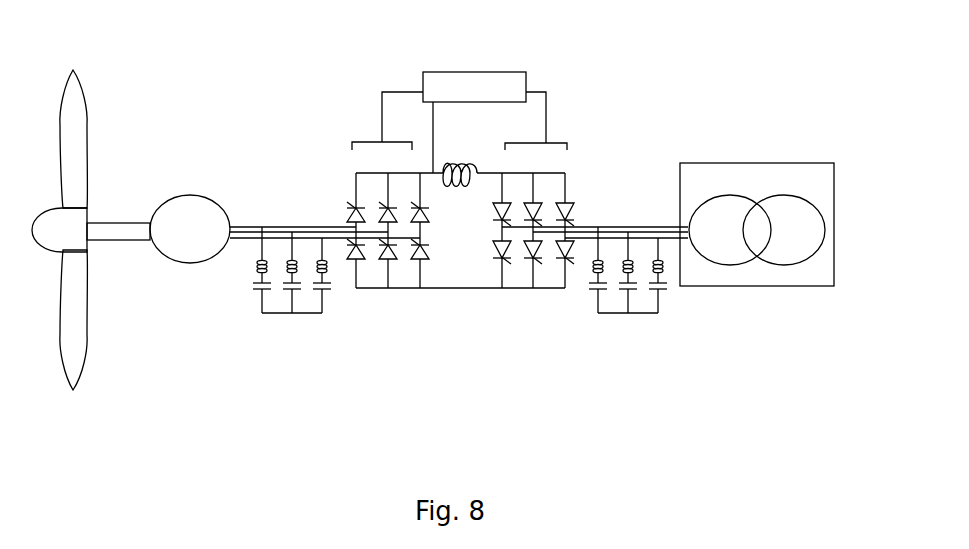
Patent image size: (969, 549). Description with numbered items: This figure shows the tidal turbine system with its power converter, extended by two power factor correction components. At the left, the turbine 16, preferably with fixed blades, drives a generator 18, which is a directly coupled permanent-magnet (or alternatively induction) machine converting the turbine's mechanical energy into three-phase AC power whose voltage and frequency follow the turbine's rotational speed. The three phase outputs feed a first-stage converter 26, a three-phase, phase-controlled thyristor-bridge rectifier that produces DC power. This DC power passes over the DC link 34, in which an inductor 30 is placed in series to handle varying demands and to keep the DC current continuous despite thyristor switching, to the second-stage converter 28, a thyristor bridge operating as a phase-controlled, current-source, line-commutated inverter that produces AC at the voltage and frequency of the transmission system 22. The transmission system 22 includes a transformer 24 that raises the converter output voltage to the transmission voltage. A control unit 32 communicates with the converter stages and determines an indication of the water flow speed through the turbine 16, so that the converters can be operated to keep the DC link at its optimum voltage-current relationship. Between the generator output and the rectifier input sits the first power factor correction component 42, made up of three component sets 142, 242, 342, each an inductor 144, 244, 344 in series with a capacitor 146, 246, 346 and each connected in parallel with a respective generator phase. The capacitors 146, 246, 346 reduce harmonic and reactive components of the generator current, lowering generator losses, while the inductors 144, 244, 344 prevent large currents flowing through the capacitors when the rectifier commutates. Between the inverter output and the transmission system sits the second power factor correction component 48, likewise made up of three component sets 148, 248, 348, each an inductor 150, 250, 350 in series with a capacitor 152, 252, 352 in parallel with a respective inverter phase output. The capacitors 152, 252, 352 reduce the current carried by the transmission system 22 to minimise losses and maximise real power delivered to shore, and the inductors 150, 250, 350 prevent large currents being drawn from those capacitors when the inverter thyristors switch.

The turbine 16 is at (83, 122).
The generator 18 is at (177, 195).
The transmission system 22 is at (793, 163).
The transformer 24 is at (730, 195).
The first-stage converter 26 is at (392, 288).
The second-stage converter 28 is at (537, 288).
The inductor 30 is at (452, 165).
The control unit 32 is at (520, 68).
The DC link 34 is at (432, 171).
The first power factor correction component 42 is at (254, 322).
The second power factor correction component 48 is at (630, 322).
The component set 142 is at (258, 247).
The component set 242 is at (290, 225).
The component set 342 is at (320, 225).
The inductor 144 is at (250, 270).
The capacitor 146 is at (258, 287).
The inductor 244 is at (287, 275).
The capacitor 246 is at (290, 287).
The inductor 344 is at (318, 273).
The capacitor 346 is at (320, 290).
The component set 148 is at (598, 222).
The component set 248 is at (628, 223).
The component set 348 is at (660, 223).
The inductor 150 is at (592, 280).
The capacitor 152 is at (598, 295).
The inductor 250 is at (632, 273).
The capacitor 252 is at (618, 287).
The inductor 350 is at (662, 273).
The capacitor 352 is at (660, 287).